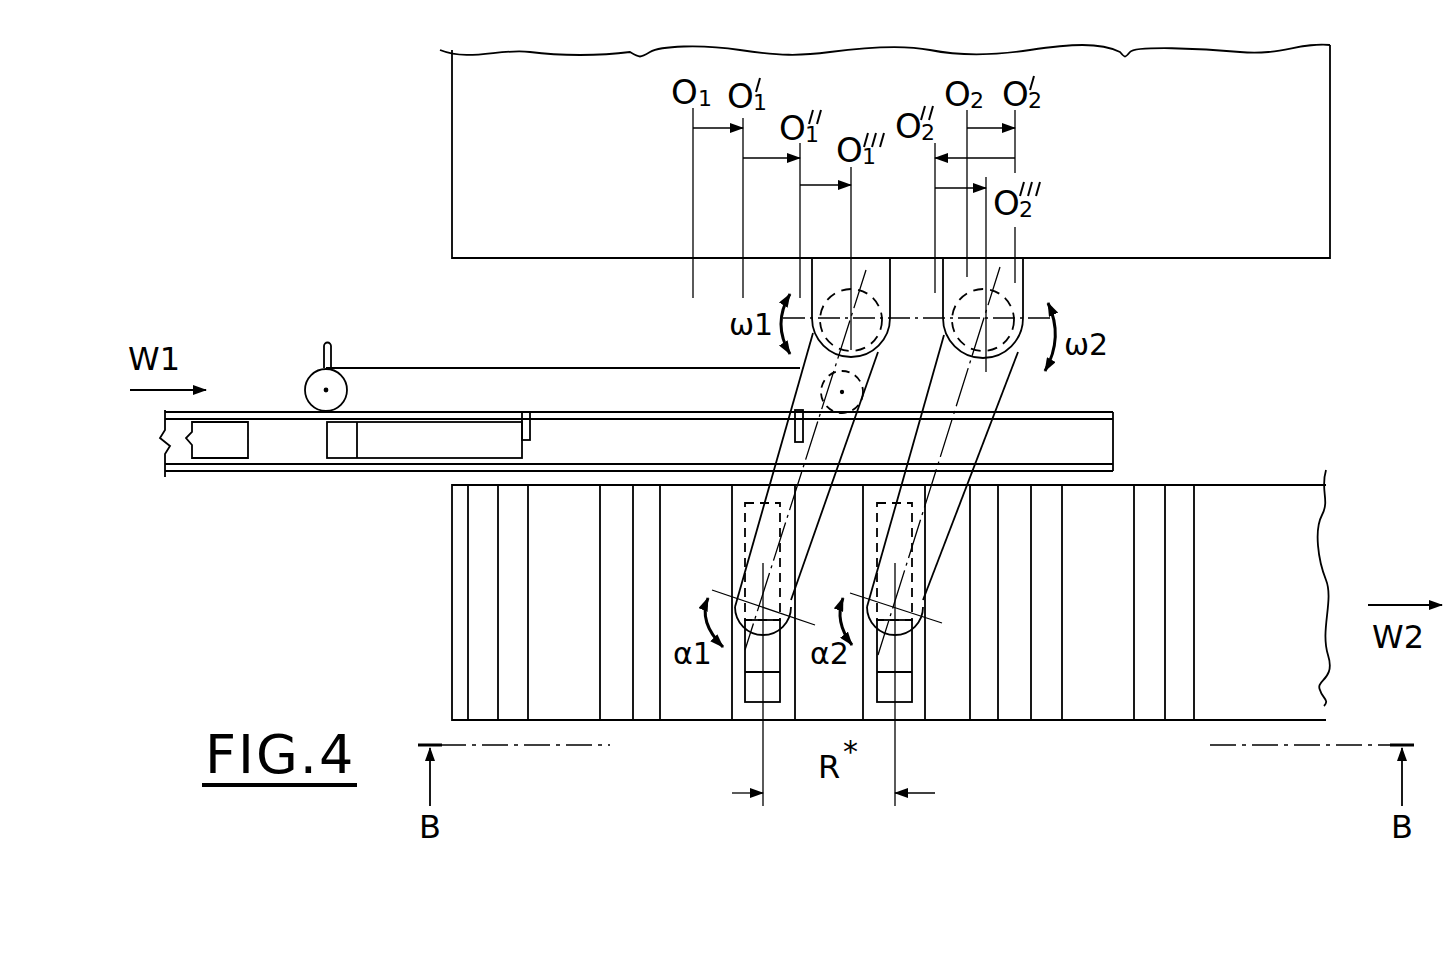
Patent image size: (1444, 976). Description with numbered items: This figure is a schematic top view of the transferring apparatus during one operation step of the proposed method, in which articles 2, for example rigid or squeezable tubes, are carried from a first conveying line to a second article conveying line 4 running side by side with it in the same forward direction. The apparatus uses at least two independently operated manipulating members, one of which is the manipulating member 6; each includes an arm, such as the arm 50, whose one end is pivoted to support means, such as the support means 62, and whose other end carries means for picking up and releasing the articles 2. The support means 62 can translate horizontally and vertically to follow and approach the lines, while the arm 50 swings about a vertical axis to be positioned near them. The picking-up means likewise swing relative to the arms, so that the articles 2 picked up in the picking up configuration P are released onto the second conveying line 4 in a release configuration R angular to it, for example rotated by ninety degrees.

The articles 2 is at (755, 690).
The second article conveying line 4 is at (1274, 470).
The manipulating member 6 is at (1004, 397).
The arm 50 is at (805, 390).
The support means 62 is at (1022, 275).
The picking up configuration P is at (378, 482).
The release configuration R is at (934, 657).